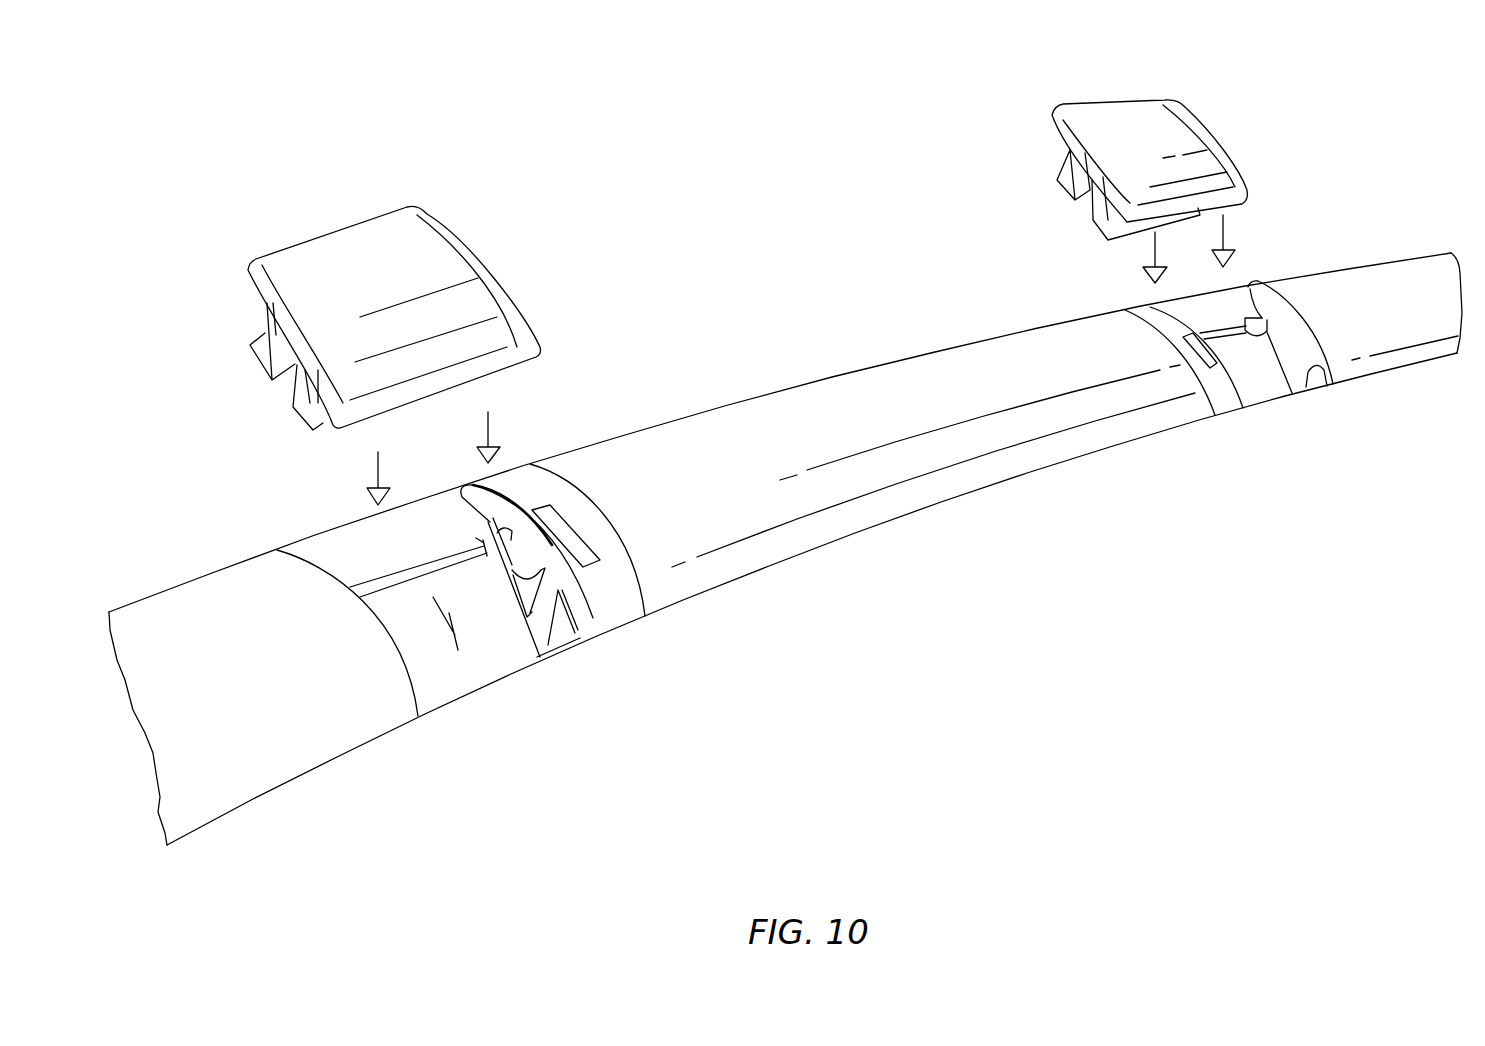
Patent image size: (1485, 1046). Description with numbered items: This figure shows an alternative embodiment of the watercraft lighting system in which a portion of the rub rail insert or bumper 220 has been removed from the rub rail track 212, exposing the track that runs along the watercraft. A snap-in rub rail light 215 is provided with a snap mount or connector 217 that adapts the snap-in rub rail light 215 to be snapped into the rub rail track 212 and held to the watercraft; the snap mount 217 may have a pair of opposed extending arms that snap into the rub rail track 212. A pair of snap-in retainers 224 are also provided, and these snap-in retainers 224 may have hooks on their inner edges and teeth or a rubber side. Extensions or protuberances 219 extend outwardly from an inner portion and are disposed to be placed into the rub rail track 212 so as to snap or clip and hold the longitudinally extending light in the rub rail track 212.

The snap-in rub rail light 215 is at (776, 543).
The rub rail insert or bumper 220 is at (288, 743).
The rub rail track 212 is at (490, 627).
The extensions or protuberances 219 is at (430, 567).
The snap mount or connector 217 is at (483, 543).
The snap-in retainers 224 is at (433, 247).